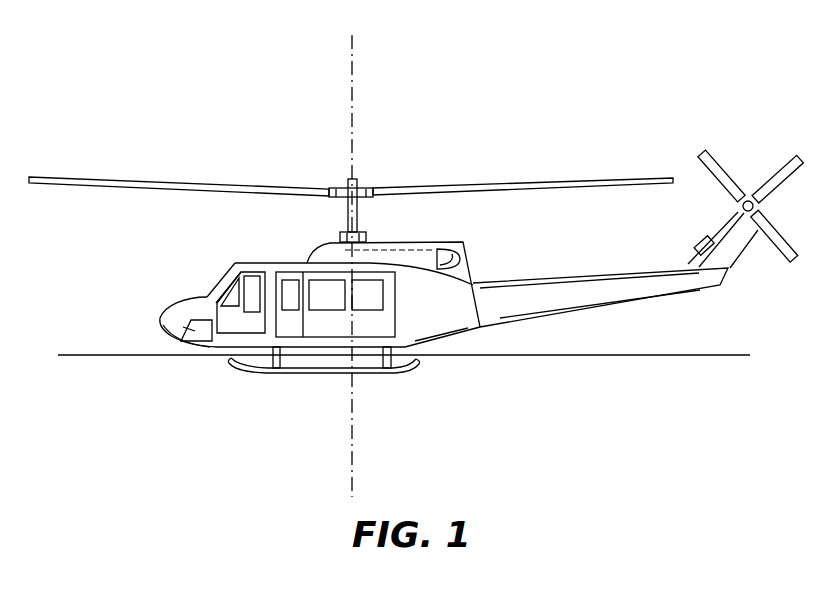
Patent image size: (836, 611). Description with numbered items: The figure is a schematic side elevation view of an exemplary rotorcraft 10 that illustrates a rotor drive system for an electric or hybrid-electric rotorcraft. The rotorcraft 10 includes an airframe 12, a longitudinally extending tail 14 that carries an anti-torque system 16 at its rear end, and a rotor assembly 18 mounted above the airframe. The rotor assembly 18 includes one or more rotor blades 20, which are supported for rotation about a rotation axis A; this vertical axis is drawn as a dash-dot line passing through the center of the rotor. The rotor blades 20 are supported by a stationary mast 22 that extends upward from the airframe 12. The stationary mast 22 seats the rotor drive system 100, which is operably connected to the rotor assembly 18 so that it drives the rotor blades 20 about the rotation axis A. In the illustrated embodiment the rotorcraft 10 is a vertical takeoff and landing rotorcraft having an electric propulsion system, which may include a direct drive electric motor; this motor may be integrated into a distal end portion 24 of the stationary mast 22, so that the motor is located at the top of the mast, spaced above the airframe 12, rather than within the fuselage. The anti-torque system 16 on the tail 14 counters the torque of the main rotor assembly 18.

The rotorcraft 10 is at (416, 317).
The airframe 12 is at (302, 338).
The longitudinally extending tail 14 is at (575, 283).
The anti-torque system 16 is at (733, 162).
The rotor assembly 18 is at (351, 186).
The rotor blade 20 is at (543, 183).
The stationary mast 22 is at (357, 221).
The distal end portion 24 is at (343, 207).
The rotor drive system 100 is at (342, 188).
The rotation axis A is at (352, 79).